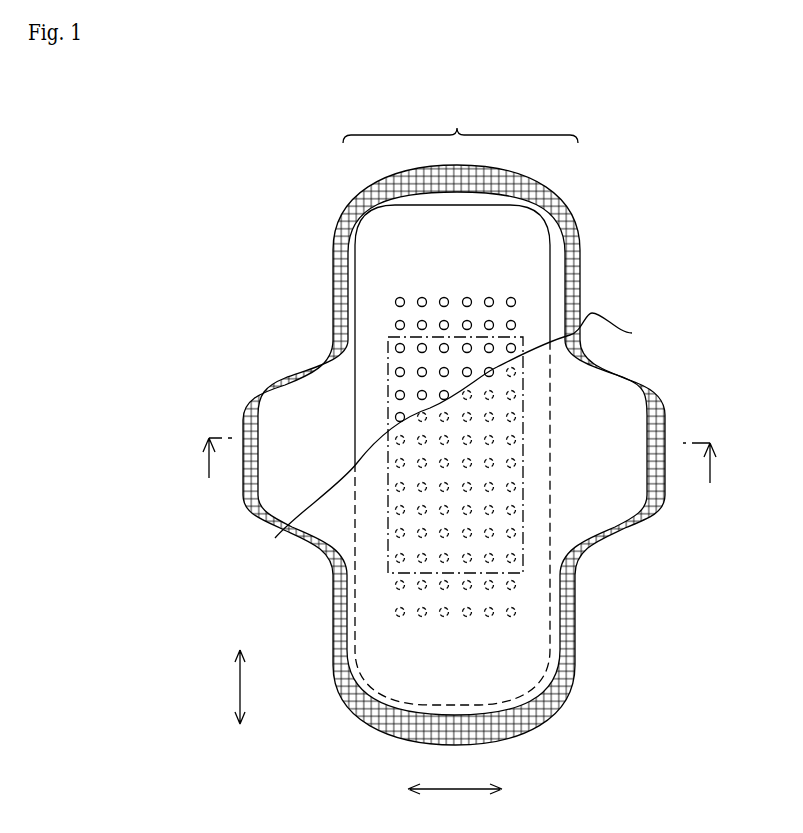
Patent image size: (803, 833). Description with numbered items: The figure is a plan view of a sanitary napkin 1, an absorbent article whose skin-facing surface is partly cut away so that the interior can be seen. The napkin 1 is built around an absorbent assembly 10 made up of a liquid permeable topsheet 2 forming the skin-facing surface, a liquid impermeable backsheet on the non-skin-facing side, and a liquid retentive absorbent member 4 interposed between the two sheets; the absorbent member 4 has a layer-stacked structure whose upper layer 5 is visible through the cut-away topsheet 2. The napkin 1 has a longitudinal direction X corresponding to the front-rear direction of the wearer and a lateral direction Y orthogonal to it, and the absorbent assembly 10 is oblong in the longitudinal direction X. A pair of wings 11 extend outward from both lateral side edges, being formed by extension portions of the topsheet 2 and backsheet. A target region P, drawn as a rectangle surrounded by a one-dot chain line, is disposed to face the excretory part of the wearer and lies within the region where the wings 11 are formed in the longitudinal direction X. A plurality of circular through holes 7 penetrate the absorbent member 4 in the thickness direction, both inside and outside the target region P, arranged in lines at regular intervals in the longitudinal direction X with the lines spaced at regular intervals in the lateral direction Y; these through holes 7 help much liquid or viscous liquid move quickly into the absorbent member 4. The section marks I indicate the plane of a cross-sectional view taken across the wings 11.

The napkin 1 is at (633, 213).
The topsheet 2 is at (507, 677).
The absorbent member 4 is at (452, 453).
The upper layer 5 is at (375, 300).
The through holes 7 is at (487, 343).
The absorbent assembly 10 is at (460, 118).
The wings 11 is at (284, 497).
The target region P is at (463, 425).
The section line I- I is at (458, 461).
The longitudinal direction X is at (227, 687).
The lateral direction Y is at (455, 806).